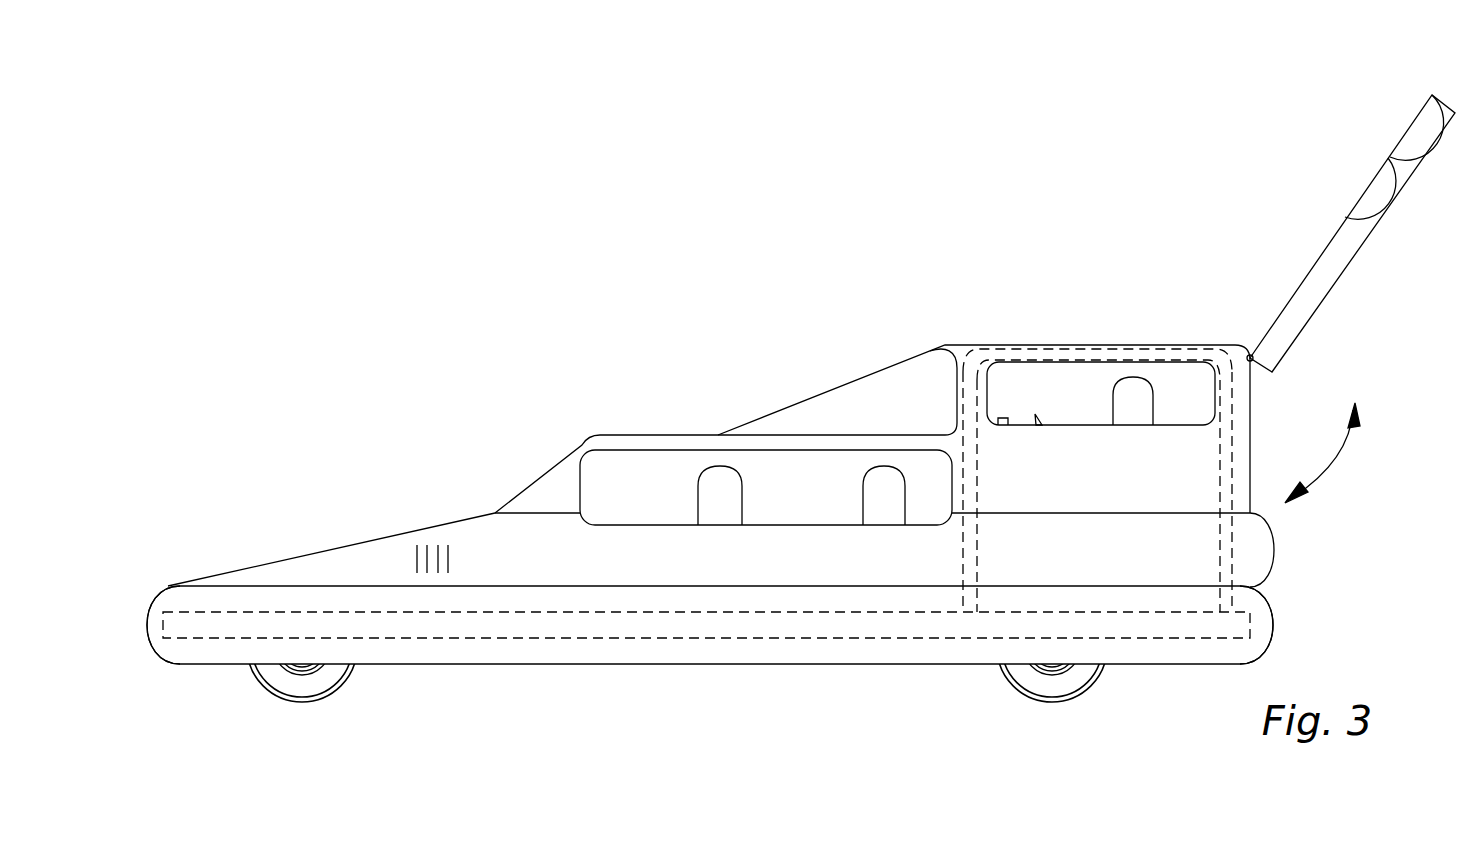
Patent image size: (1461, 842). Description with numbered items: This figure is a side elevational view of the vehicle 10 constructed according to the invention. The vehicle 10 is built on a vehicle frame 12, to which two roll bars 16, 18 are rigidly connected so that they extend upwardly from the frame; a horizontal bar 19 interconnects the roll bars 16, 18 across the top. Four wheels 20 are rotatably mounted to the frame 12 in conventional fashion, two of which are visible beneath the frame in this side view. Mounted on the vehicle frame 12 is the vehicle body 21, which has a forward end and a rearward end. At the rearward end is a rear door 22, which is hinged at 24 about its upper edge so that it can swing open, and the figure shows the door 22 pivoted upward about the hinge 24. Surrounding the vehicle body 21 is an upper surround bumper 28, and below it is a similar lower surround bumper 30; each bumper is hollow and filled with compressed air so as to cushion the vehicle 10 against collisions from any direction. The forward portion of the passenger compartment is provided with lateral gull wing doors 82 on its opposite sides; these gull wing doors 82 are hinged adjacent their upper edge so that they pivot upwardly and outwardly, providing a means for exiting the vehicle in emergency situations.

The vehicle 10 is at (693, 345).
The vehicle frame 12 is at (623, 637).
The roll bar 16 is at (963, 540).
The roll bar 18 is at (1220, 526).
The horizontal bar 19 is at (1092, 336).
The wheels 20 is at (322, 676).
The vehicle body 21 is at (325, 552).
The rear door 22 is at (1310, 405).
The hinge 24 is at (1248, 352).
The upper surround bumper 28 is at (1090, 520).
The lower surround bumper 30 is at (150, 622).
The gull wing doors 82 is at (595, 470).